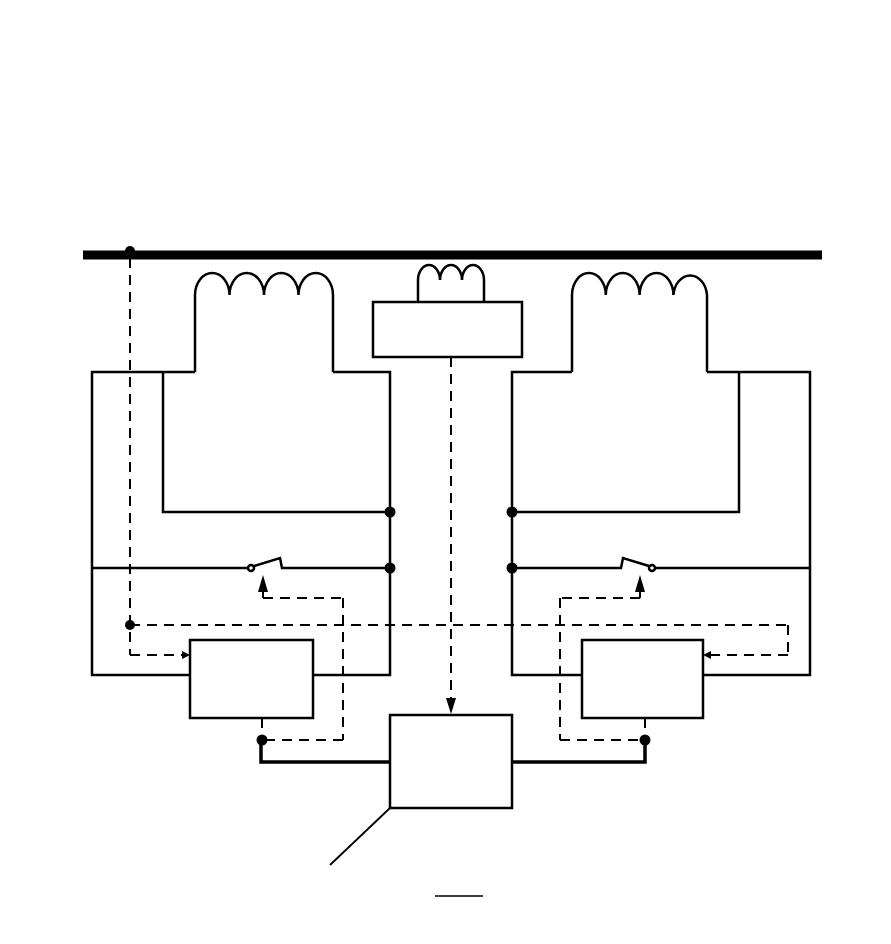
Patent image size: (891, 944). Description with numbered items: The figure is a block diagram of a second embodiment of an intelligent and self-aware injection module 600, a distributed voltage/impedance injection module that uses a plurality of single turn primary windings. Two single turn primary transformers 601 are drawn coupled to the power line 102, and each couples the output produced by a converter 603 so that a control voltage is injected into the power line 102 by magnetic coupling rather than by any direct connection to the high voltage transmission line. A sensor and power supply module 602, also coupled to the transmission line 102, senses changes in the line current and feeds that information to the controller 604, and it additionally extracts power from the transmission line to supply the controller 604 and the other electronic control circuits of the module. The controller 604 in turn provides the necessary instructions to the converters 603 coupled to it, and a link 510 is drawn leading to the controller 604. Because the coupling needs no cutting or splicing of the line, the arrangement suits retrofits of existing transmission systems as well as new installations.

The intelligent and self-aware injection module 600 is at (343, 106).
The power line 102 is at (501, 250).
The single turn primary transformer 601 is at (261, 290).
The sensor and power supply module 602 is at (413, 300).
The converter 603 is at (190, 710).
The controller 604 is at (513, 778).
The communication link 510 is at (367, 834).